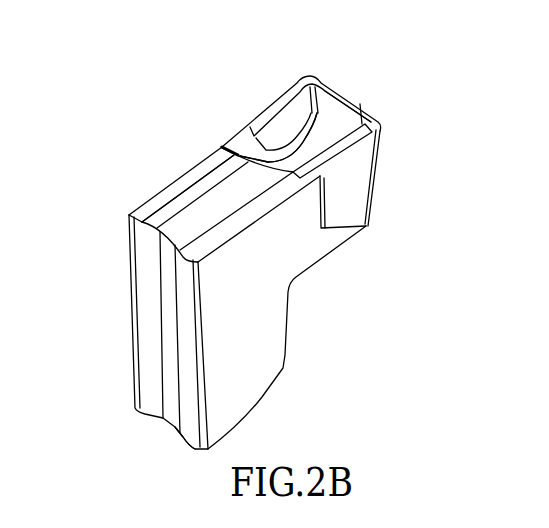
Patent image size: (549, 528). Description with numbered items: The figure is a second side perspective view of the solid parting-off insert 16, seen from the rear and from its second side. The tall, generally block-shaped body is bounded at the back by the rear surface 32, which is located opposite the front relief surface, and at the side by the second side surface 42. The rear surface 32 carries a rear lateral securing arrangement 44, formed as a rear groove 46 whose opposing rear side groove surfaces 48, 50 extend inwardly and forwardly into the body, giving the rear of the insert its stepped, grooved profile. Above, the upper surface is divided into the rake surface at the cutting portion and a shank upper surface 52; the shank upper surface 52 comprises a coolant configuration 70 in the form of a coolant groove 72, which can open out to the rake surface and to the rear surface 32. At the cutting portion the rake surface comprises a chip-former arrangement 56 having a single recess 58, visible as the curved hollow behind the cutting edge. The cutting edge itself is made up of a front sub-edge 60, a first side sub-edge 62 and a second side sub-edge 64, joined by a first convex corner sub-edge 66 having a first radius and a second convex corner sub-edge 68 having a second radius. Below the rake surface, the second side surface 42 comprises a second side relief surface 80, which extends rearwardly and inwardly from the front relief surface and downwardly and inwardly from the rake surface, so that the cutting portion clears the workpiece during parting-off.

The solid parting-off insert 16 is at (190, 87).
The rear surface 32 is at (128, 296).
The second side surface 42 is at (241, 316).
The rear lateral securing arrangement 44 is at (125, 355).
The rear groove 46 is at (157, 313).
The rear side groove surface 48 is at (147, 414).
The rear side groove surface 50 is at (185, 438).
The shank upper surface 52 is at (173, 183).
The coolant configuration 70 is at (188, 188).
The coolant groove 72 is at (217, 198).
The chip-former arrangement 56 is at (331, 114).
The recess 58 is at (278, 137).
The front sub-edge 60 is at (369, 103).
The first side sub-edge 62 is at (343, 154).
The second side sub-edge 64 is at (280, 103).
The first convex corner sub-edge 66 is at (392, 128).
The second convex corner sub-edge 68 is at (304, 74).
The second side relief surface 80 is at (341, 191).